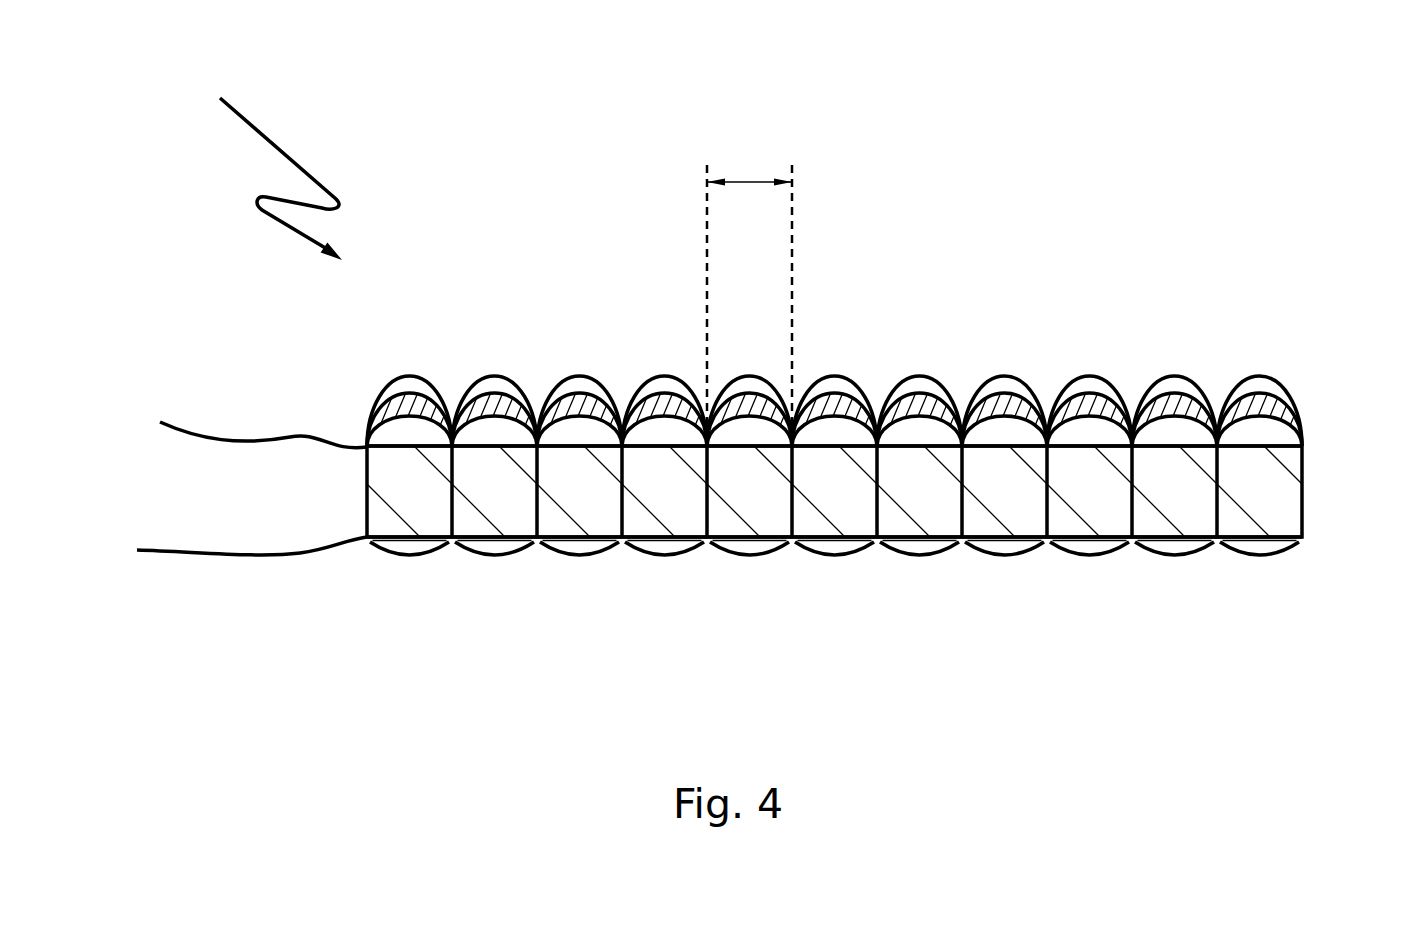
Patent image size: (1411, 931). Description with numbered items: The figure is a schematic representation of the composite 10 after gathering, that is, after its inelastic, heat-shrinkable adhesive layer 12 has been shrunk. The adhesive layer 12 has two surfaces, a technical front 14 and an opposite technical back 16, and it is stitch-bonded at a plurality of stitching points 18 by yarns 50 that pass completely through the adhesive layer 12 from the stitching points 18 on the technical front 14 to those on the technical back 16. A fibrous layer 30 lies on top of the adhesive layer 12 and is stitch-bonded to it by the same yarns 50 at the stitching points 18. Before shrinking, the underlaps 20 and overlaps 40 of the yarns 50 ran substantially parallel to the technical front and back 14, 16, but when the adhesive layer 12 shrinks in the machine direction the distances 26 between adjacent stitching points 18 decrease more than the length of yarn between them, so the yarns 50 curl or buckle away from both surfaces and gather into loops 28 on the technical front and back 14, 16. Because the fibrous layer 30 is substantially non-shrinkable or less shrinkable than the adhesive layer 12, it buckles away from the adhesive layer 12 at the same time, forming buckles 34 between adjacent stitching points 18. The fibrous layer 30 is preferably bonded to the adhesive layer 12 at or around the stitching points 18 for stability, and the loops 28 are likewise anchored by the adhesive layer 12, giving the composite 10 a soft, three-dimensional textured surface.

The composite 10 is at (263, 158).
The adhesive layer 12 is at (377, 517).
The technical front 14 is at (373, 543).
The technical back 16 is at (363, 455).
The stitching points 18 is at (452, 420).
The underlaps 20 is at (1300, 397).
The distances between stitching points 26 is at (747, 182).
The loops 28 is at (380, 387).
The fibrous layer 30 is at (393, 410).
The buckles 34 is at (495, 393).
The overlaps 40 is at (1277, 553).
The yarns 50 is at (207, 437).